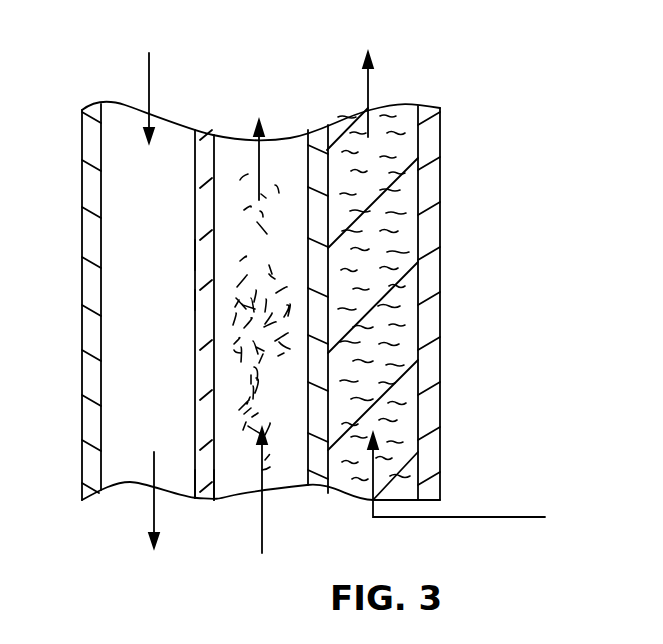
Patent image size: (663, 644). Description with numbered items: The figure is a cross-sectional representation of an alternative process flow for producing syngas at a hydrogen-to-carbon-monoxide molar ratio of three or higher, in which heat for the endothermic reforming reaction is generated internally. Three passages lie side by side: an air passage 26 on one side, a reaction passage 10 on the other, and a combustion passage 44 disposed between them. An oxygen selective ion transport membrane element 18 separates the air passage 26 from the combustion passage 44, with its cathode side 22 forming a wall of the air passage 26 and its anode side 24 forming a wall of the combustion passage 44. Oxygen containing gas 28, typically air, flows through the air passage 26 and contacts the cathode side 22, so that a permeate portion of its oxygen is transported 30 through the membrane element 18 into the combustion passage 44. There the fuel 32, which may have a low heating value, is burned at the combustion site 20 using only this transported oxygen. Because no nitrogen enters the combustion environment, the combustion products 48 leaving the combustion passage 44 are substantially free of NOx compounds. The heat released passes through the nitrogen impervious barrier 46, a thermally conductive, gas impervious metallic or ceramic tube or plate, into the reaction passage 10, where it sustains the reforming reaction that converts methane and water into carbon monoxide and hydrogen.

The reaction passage 10 is at (405, 156).
The oxygen selective ion transport membrane element 18 is at (207, 133).
The combustion site 20 is at (273, 215).
The cathode side 22 is at (205, 147).
The anode side 24 is at (216, 476).
The air passage 26 is at (124, 183).
The oxygen containing gas 28 is at (148, 78).
The oxygen transport 30 is at (204, 299).
The fuel 32 is at (263, 537).
The combustion passage 44 is at (236, 261).
The nitrogen impervious barrier 46 is at (318, 470).
The combustion products 48 is at (258, 165).